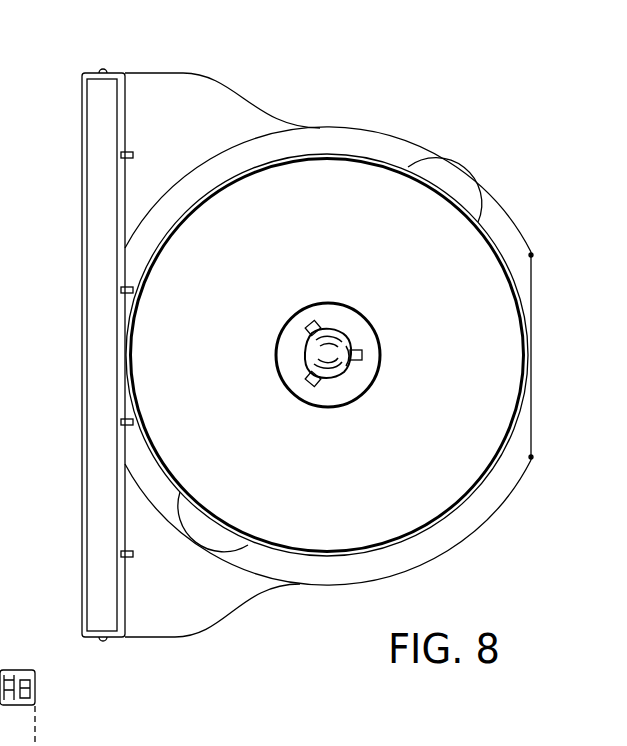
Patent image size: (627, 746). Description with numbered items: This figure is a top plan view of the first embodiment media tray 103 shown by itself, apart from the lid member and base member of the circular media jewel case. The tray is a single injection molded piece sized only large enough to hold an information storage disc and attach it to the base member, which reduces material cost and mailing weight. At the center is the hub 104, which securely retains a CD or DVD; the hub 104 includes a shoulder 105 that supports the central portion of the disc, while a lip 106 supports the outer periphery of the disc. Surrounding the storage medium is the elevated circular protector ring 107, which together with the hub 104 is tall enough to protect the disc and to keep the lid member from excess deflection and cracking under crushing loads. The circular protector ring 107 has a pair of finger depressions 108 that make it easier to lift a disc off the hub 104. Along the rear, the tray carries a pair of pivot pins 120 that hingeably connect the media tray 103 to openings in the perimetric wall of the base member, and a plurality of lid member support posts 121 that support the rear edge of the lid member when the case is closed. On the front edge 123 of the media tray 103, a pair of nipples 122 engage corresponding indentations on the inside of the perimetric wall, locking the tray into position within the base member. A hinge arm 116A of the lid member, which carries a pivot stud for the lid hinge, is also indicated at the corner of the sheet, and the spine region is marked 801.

The first embodiment media tray 103 is at (346, 479).
The hub 104 is at (336, 340).
The shoulder 105 is at (362, 335).
The lip 106 is at (473, 494).
The elevated circular protector ring 107 is at (437, 545).
The finger depressions 108 is at (448, 178).
The pivot pins 120 is at (103, 71).
The lid member support posts 121 is at (122, 154).
The nipples 122 is at (533, 257).
The front edge 123 is at (533, 355).
The spine 801 is at (102, 490).
The hinge arm 116A is at (12, 705).